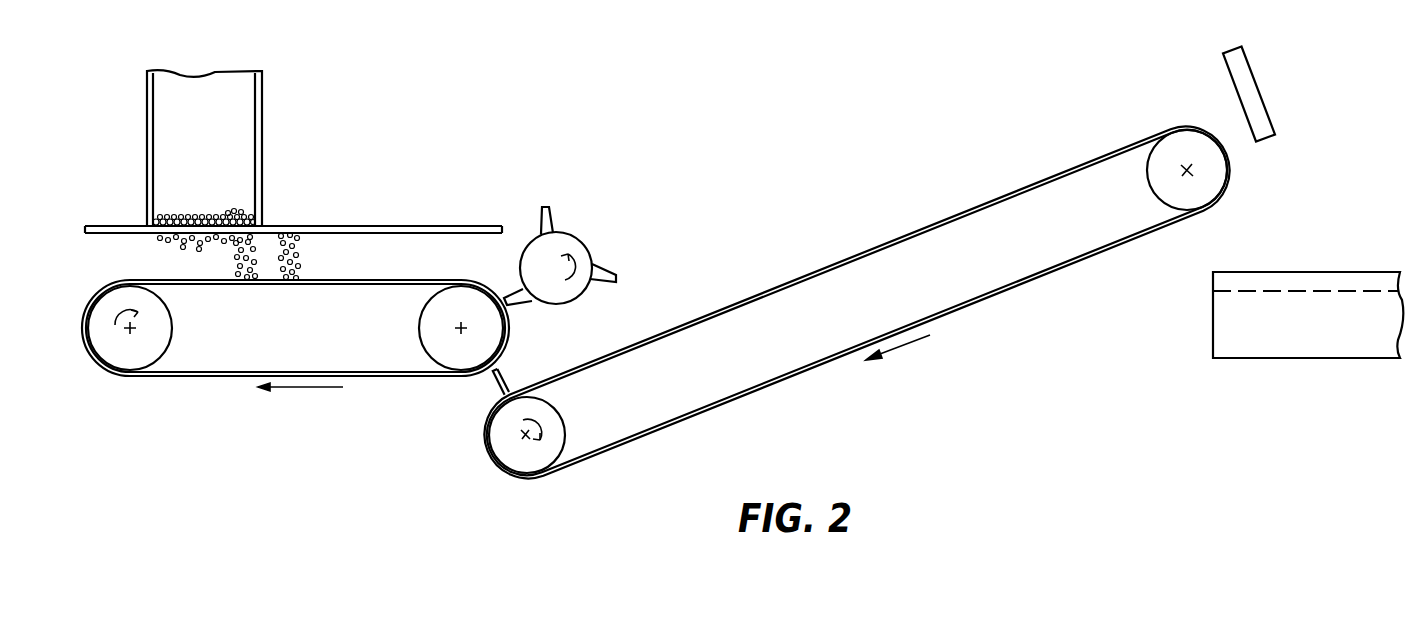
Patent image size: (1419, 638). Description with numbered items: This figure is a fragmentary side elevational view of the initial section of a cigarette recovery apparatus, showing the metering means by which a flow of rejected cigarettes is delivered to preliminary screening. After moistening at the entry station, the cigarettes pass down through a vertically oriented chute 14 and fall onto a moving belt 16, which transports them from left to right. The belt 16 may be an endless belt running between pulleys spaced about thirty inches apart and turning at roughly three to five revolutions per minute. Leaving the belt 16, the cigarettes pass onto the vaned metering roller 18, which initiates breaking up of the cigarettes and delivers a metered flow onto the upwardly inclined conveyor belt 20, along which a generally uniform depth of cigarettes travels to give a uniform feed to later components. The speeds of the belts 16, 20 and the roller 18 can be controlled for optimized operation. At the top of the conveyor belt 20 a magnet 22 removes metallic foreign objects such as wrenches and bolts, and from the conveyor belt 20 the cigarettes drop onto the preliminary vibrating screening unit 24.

The chute 14 is at (263, 160).
The moving belt 16 is at (330, 280).
The vaned metering roller 18 is at (562, 306).
The upwardly inclined conveyor belt 20 is at (805, 278).
The magnet 22 is at (1253, 57).
The preliminary vibrating screening unit 24 is at (1319, 264).